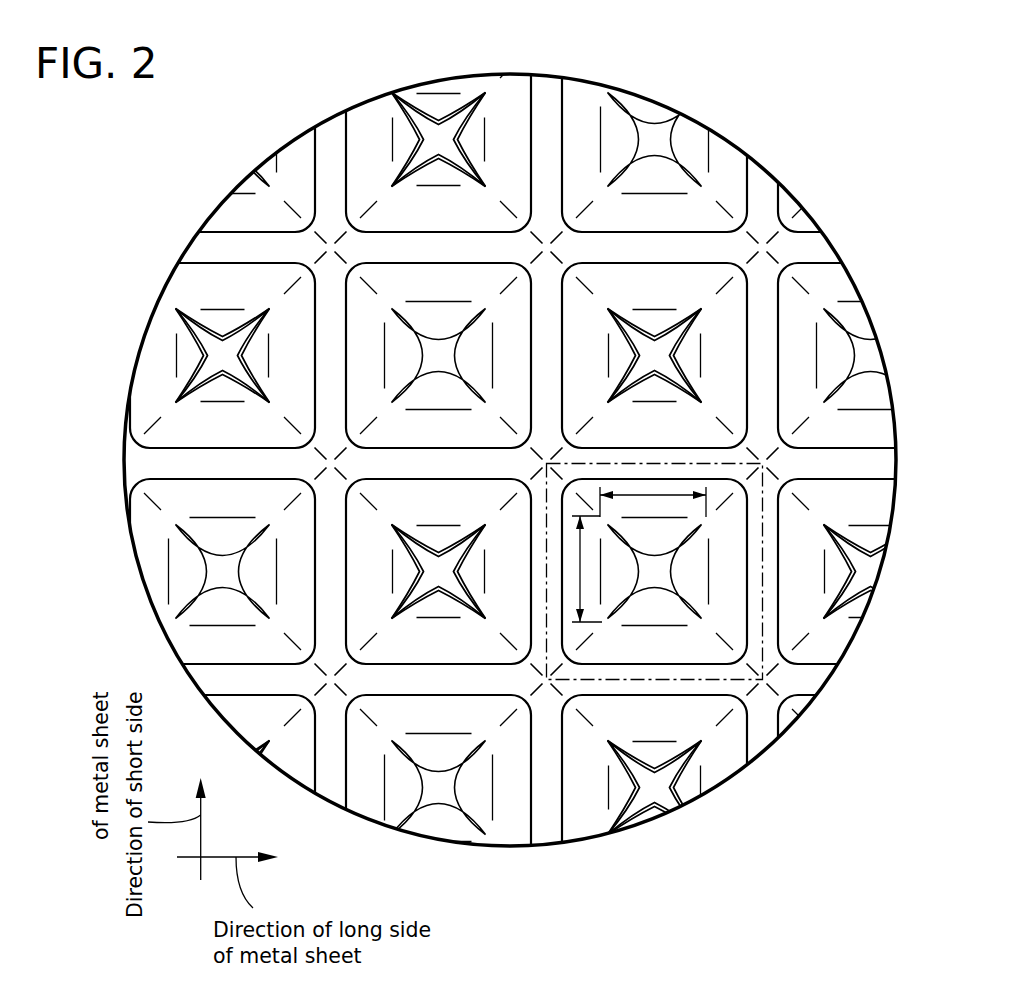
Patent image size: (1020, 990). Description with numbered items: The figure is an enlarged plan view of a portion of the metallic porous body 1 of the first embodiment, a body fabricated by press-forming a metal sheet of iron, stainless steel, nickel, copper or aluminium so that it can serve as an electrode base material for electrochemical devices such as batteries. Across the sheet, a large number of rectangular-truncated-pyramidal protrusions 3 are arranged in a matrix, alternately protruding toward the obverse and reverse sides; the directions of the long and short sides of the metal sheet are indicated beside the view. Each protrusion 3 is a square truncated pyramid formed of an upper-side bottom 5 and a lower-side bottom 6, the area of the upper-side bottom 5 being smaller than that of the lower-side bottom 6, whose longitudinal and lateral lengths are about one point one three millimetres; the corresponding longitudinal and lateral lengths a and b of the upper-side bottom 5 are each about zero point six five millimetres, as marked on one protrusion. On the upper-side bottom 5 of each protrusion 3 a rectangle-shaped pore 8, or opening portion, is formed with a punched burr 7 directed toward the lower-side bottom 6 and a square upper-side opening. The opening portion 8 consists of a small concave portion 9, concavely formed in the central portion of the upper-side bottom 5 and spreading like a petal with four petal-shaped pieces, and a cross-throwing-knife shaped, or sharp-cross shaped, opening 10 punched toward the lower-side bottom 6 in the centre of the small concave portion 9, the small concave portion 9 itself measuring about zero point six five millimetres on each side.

The metallic porous body 1 is at (764, 187).
The rectangular-truncated-pyramidal protrusion 3 is at (580, 823).
The upper-side bottom 5 is at (693, 638).
The lower-side bottom 6 is at (546, 503).
The punched burr 7 is at (688, 356).
The pore 8 is at (712, 562).
The small concave portion 9 is at (693, 587).
The cross-throwing-knife shaped opening 10 is at (640, 588).
The longitudinal length of upper-side bottom a is at (650, 492).
The lateral length of upper-side bottom b is at (578, 570).